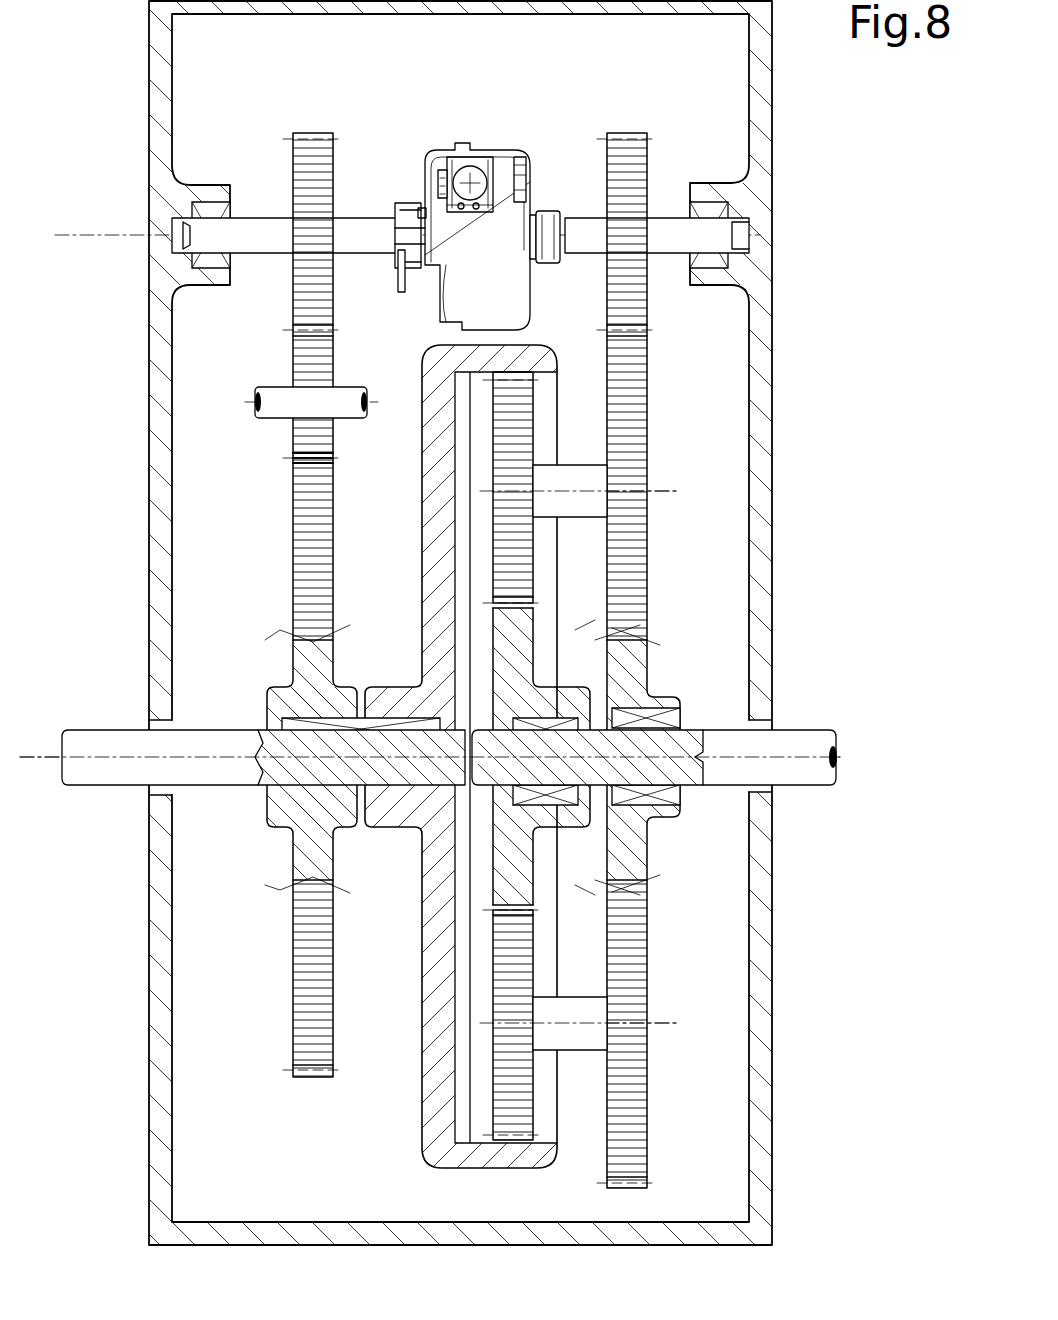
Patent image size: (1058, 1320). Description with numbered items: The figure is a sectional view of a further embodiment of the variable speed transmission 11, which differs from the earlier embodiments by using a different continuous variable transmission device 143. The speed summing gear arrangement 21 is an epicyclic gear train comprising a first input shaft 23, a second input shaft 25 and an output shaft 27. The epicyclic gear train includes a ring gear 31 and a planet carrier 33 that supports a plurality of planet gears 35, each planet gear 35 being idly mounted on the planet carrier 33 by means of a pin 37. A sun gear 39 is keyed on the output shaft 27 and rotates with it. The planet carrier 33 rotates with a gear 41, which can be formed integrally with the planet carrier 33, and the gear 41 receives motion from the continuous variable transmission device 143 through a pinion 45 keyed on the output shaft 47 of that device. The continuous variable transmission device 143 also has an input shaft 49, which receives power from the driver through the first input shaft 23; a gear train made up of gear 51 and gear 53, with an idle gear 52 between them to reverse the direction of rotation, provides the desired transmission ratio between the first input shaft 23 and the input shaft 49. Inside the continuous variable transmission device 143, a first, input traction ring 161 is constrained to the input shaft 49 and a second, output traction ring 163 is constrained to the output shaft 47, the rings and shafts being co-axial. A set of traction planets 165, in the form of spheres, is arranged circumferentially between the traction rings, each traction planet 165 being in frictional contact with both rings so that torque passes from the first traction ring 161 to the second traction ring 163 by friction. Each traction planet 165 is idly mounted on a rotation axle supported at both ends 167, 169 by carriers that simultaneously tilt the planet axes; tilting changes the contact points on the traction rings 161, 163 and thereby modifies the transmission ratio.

The variable speed transmission 11 is at (815, 258).
The speed summing gear arrangement 21 is at (658, 647).
The first input shaft 23 is at (100, 745).
The second input shaft 25 is at (655, 698).
The output shaft 27 is at (795, 745).
The ring gear 31 is at (435, 498).
The planet carrier 33 is at (625, 968).
The planet gears 35 is at (522, 432).
The pin 37 is at (570, 505).
The sun gear 39 is at (516, 880).
The gear 41 is at (625, 1186).
The pinion 45 is at (640, 143).
The output shaft 47 is at (672, 252).
The input shaft 49 is at (258, 247).
The gear 51 is at (300, 143).
The idle gear 52 is at (300, 428).
The gear 53 is at (313, 575).
The continuous variable transmission device 143 is at (496, 206).
The first input traction ring 161 is at (455, 153).
The second output traction ring 163 is at (490, 162).
The traction planets 165 is at (471, 170).
The axle end 167 is at (440, 183).
The axle end 169 is at (526, 163).